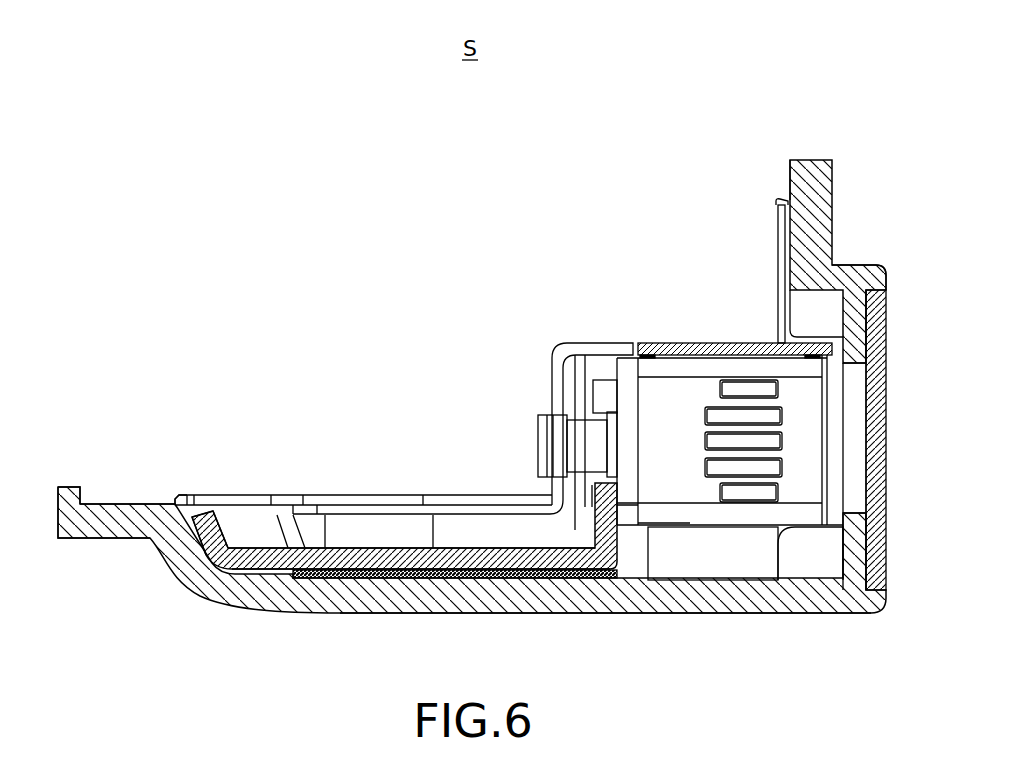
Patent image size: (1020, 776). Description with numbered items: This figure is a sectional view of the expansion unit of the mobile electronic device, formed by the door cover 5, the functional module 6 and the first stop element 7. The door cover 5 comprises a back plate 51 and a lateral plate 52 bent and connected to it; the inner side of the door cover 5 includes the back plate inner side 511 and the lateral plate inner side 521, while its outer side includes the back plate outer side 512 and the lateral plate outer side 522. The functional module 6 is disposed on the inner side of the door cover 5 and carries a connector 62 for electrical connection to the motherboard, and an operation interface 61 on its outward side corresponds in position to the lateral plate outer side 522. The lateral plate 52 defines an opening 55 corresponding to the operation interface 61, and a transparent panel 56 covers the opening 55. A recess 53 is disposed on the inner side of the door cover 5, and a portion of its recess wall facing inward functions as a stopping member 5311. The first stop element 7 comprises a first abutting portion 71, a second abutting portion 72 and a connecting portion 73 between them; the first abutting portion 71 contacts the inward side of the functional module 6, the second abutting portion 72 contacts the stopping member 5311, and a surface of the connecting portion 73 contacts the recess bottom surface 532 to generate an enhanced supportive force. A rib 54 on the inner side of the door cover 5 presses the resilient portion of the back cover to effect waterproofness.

The door cover 5 is at (806, 611).
The back plate 51 is at (62, 520).
The back plate inner side 511 is at (115, 503).
The back plate outer side 512 is at (613, 613).
The lateral plate 52 is at (810, 163).
The lateral plate inner side 521 is at (788, 190).
The lateral plate outer side 522 is at (885, 285).
The recess 53 is at (260, 517).
The stopping member 5311 is at (193, 515).
The recess bottom surface 532 is at (505, 562).
The rib 54 is at (785, 201).
The opening 55 is at (851, 400).
The transparent panel 56 is at (878, 372).
The functional module 6 is at (688, 492).
The operation interface 61 is at (827, 442).
The connector 62 is at (547, 417).
The first stop element 7 is at (388, 547).
The first abutting portion 71 is at (604, 485).
The second abutting portion 72 is at (222, 528).
The connecting portion 73 is at (422, 560).